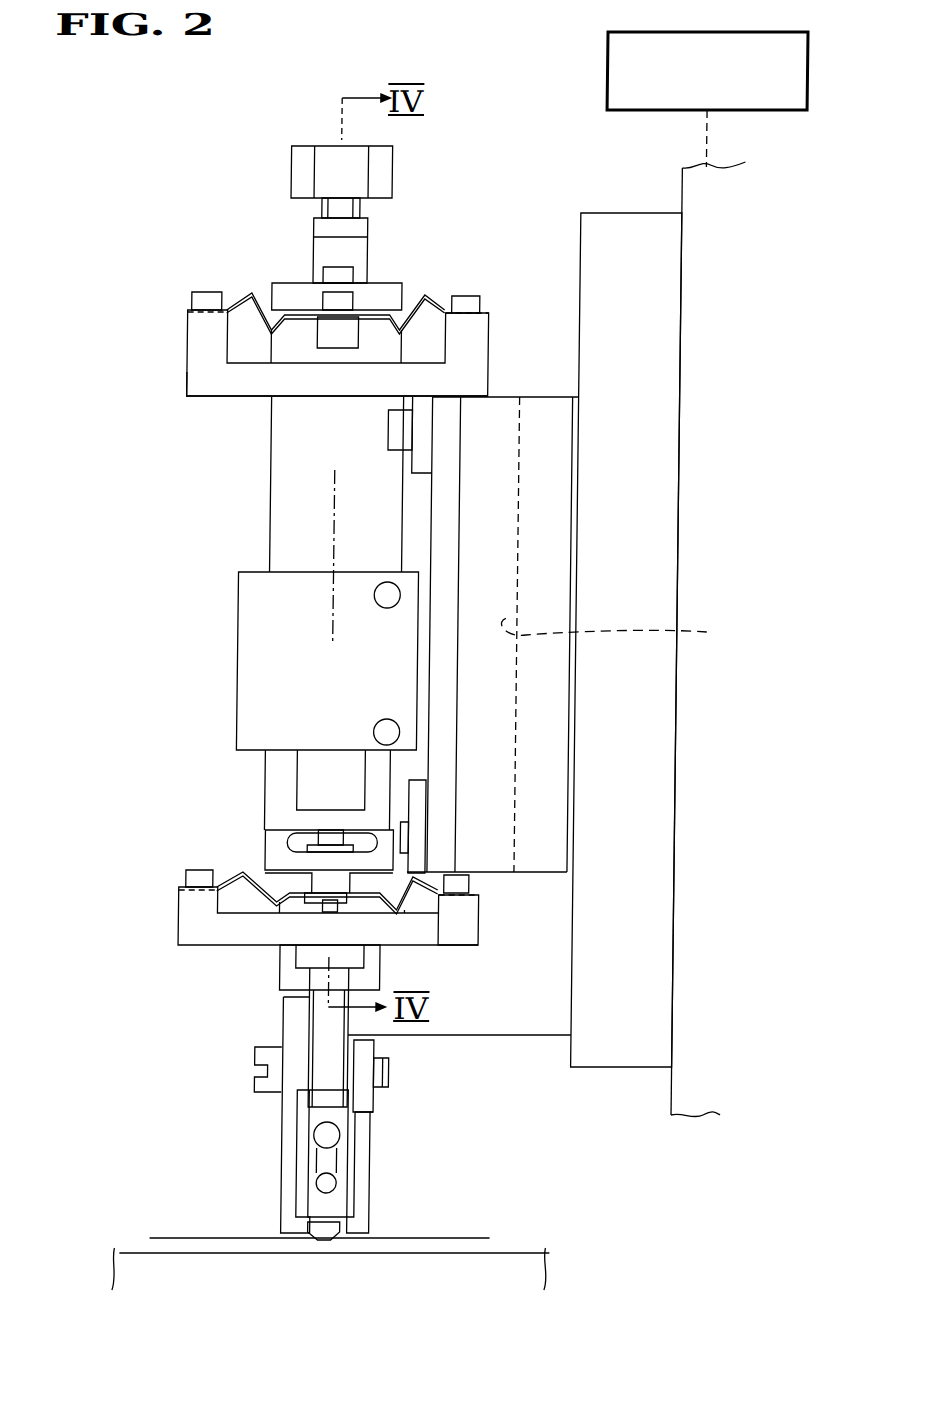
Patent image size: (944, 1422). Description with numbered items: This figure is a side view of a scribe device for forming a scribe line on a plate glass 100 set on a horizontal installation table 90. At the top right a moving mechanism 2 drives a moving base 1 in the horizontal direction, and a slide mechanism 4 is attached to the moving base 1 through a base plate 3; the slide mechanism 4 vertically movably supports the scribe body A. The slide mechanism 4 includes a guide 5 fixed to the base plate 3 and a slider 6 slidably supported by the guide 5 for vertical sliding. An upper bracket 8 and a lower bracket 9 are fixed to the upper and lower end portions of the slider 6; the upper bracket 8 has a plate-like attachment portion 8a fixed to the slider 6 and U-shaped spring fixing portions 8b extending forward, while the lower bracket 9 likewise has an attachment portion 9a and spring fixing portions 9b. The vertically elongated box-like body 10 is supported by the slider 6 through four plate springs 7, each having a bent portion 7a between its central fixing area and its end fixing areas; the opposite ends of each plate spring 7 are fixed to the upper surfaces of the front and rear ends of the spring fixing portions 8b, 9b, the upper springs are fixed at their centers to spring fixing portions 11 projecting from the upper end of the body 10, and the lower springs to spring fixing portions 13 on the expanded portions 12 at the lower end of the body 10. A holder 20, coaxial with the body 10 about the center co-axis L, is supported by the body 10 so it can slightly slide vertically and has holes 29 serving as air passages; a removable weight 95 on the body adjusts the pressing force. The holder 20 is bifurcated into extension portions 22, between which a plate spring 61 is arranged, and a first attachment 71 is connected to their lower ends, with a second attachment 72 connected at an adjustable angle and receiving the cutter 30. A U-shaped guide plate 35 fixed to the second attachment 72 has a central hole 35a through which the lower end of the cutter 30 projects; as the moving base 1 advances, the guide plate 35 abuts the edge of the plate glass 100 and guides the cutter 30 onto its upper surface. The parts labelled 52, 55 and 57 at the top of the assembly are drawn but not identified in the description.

The moving base 1 is at (728, 165).
The moving mechanism 2 is at (600, 72).
The base plate 3 is at (611, 212).
The slide mechanism 4 is at (534, 385).
The guide 5 is at (616, 634).
The slider 6 is at (543, 578).
The plate spring 7 is at (291, 306).
The bent portion 7a is at (256, 300).
The upper bracket 8 is at (172, 334).
The attachment portion 8a is at (400, 462).
The spring fixing portion 8b is at (183, 372).
The lower bracket 9 is at (172, 950).
The attachment portion 9a is at (428, 803).
The spring fixing portion 9b is at (435, 935).
The body 10 is at (256, 466).
The spring fixing portion 11 is at (334, 341).
The expanded portion 12 is at (277, 845).
The spring fixing portion 13 is at (327, 912).
The holder 20 is at (318, 776).
The extension portion 22 is at (278, 965).
The hole 29 is at (331, 828).
The cutter 30 is at (333, 1232).
The guide plate 35 is at (296, 1195).
The hole 35a is at (350, 1236).
The mounting plate 52 is at (390, 286).
The knob neck 55 is at (354, 210).
The knob body 57 is at (341, 256).
The plate spring 61 is at (338, 828).
The first attachment 71 is at (330, 1050).
The second attachment 72 is at (375, 1092).
The installation table 90 is at (566, 1255).
The weight 95 is at (262, 700).
The plate glass 100 is at (461, 1240).
The scribe body A is at (254, 483).
The center co-axis L is at (332, 535).